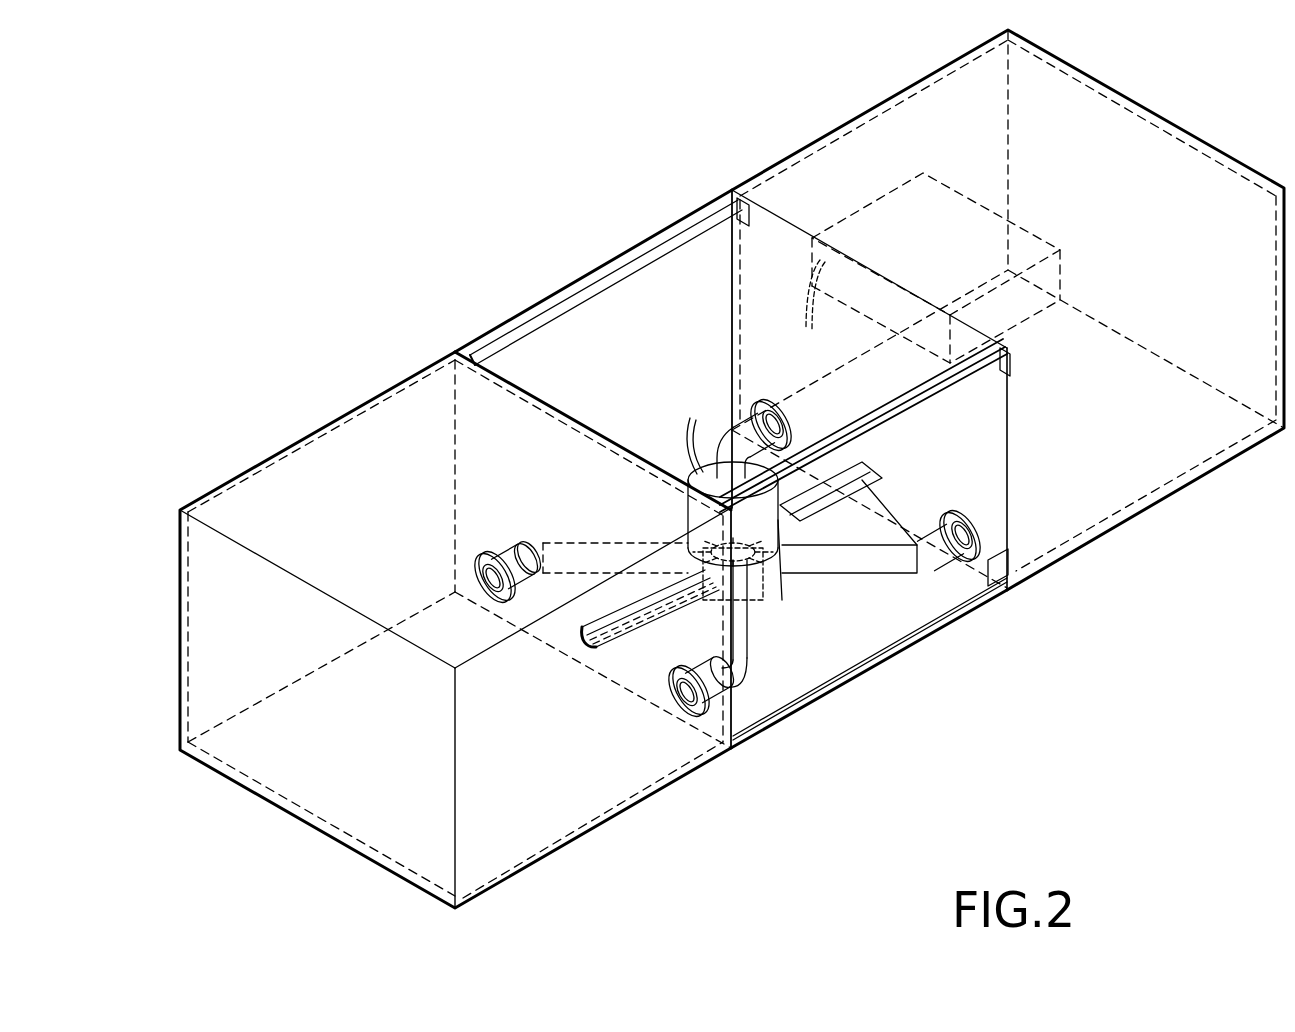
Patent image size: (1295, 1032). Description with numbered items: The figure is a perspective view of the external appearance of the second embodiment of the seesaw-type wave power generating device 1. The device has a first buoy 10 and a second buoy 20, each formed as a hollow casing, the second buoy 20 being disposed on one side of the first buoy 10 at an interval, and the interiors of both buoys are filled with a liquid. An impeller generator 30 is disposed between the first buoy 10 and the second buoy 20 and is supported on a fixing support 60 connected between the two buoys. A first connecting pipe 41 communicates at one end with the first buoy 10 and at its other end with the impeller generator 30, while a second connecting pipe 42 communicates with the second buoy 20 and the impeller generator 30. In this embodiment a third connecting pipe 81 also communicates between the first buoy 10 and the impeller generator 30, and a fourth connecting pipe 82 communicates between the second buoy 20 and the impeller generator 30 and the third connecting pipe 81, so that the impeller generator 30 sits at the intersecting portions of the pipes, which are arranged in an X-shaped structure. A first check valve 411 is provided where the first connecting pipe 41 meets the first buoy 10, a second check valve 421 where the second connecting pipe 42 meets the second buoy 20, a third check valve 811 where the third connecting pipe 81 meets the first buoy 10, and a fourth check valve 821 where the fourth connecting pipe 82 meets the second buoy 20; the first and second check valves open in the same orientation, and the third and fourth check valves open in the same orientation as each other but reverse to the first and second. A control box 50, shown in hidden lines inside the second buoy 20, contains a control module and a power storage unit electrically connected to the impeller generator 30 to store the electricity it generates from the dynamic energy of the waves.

The seesaw-type wave power generating device 1 is at (460, 72).
The first buoy 10 is at (600, 795).
The second buoy 20 is at (1183, 458).
The control box 50 is at (885, 207).
The impeller generator 30 is at (798, 552).
The first connecting pipe 41 is at (748, 610).
The first check valve 411 is at (680, 700).
The second connecting pipe 42 is at (733, 427).
The second check valve 421 is at (778, 392).
The fixing support 60 is at (827, 510).
The third connecting pipe 81 is at (606, 550).
The third check valve 811 is at (482, 575).
The fourth connecting pipe 82 is at (905, 557).
The fourth check valve 821 is at (990, 525).